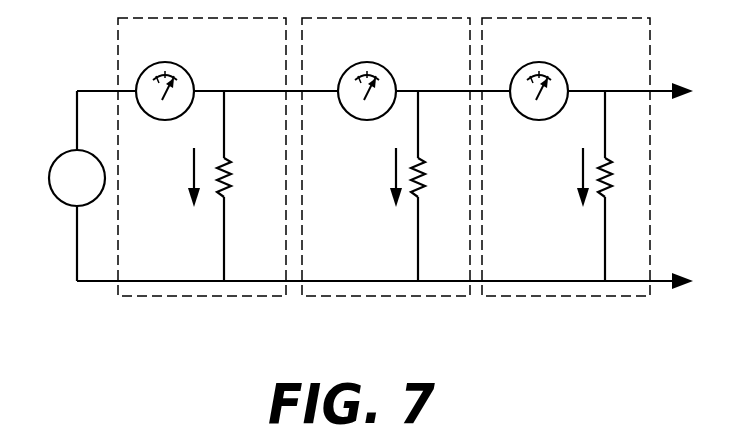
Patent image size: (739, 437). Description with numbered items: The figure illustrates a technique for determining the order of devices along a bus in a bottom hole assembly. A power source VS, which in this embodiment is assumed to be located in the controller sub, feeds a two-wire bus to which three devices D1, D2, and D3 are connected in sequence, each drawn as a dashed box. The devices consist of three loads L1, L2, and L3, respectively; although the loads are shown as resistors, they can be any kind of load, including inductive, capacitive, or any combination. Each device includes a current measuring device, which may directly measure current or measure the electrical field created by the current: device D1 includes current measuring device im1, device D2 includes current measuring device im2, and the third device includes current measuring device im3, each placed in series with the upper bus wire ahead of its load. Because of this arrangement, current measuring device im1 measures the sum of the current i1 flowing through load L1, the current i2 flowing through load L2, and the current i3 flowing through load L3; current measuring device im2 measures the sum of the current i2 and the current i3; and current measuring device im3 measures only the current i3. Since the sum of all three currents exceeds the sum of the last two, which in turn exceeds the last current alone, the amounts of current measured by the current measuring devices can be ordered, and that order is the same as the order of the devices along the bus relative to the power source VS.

The power source VS is at (77, 178).
The device D1 is at (202, 157).
The device D2 is at (386, 157).
The device D3 is at (566, 157).
The current measuring device im1 is at (165, 73).
The current measuring device im2 is at (367, 73).
The current measuring device im3 is at (539, 73).
The load L1 is at (239, 186).
The load L2 is at (432, 186).
The load L3 is at (620, 186).
The current i1 is at (186, 177).
The current i2 is at (390, 177).
The current i3 is at (573, 177).